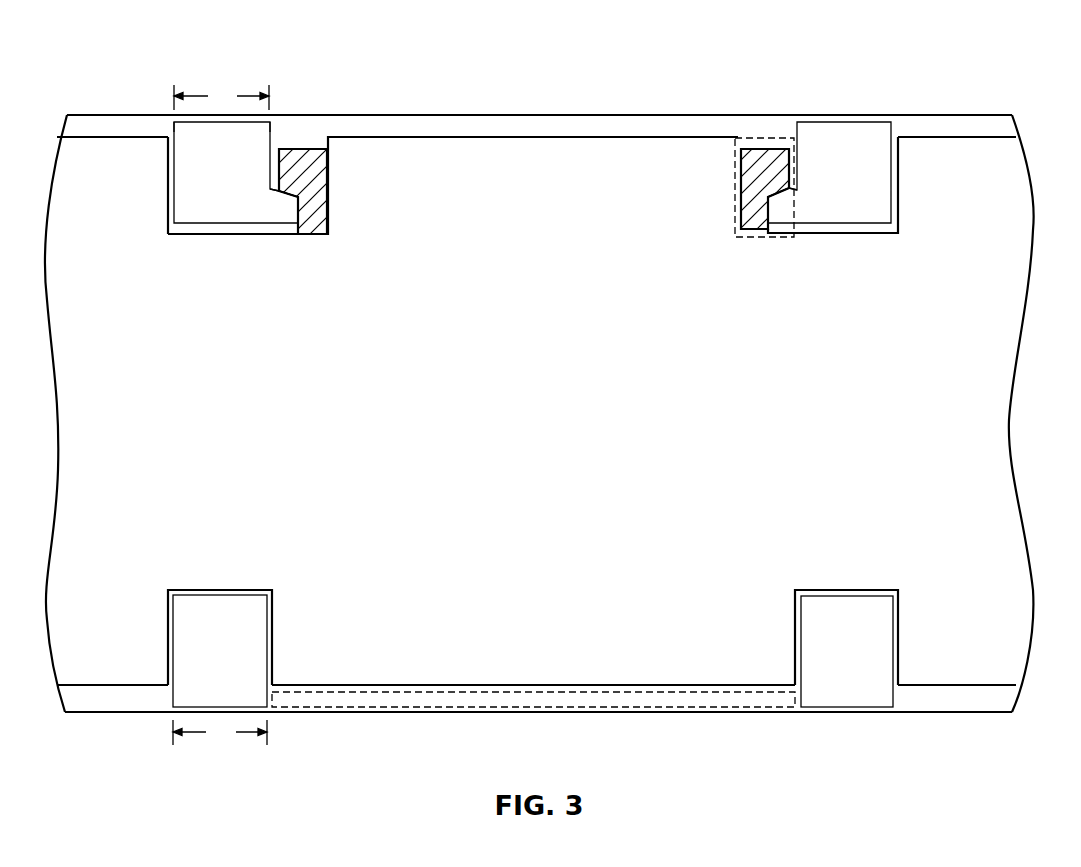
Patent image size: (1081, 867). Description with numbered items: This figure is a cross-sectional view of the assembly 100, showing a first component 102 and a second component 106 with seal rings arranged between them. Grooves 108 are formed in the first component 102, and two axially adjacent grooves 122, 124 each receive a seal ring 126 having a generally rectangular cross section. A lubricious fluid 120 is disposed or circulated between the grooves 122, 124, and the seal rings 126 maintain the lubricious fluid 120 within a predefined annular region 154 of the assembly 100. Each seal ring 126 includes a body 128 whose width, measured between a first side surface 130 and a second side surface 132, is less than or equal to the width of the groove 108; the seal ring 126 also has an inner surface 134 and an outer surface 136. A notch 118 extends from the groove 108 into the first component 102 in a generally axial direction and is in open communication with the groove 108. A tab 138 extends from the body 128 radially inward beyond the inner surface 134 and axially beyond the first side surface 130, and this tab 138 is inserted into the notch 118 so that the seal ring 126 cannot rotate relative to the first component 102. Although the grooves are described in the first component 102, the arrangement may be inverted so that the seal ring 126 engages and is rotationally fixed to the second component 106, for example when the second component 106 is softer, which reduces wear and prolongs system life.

The assembly 100 is at (982, 78).
The first component 102 is at (992, 455).
The second component 106 is at (687, 113).
The groove 108 is at (228, 226).
The notch 118 is at (327, 187).
The lubricious fluid 120 is at (548, 700).
The groove 122 is at (235, 592).
The groove 124 is at (865, 592).
The seal ring 126 is at (533, 414).
The body 128 is at (190, 215).
The first side surface 130 is at (269, 123).
The second side surface 132 is at (174, 123).
The inner surface 134 is at (862, 225).
The outer surface 136 is at (843, 118).
The tab 138 is at (293, 224).
The annular region 154 is at (672, 714).